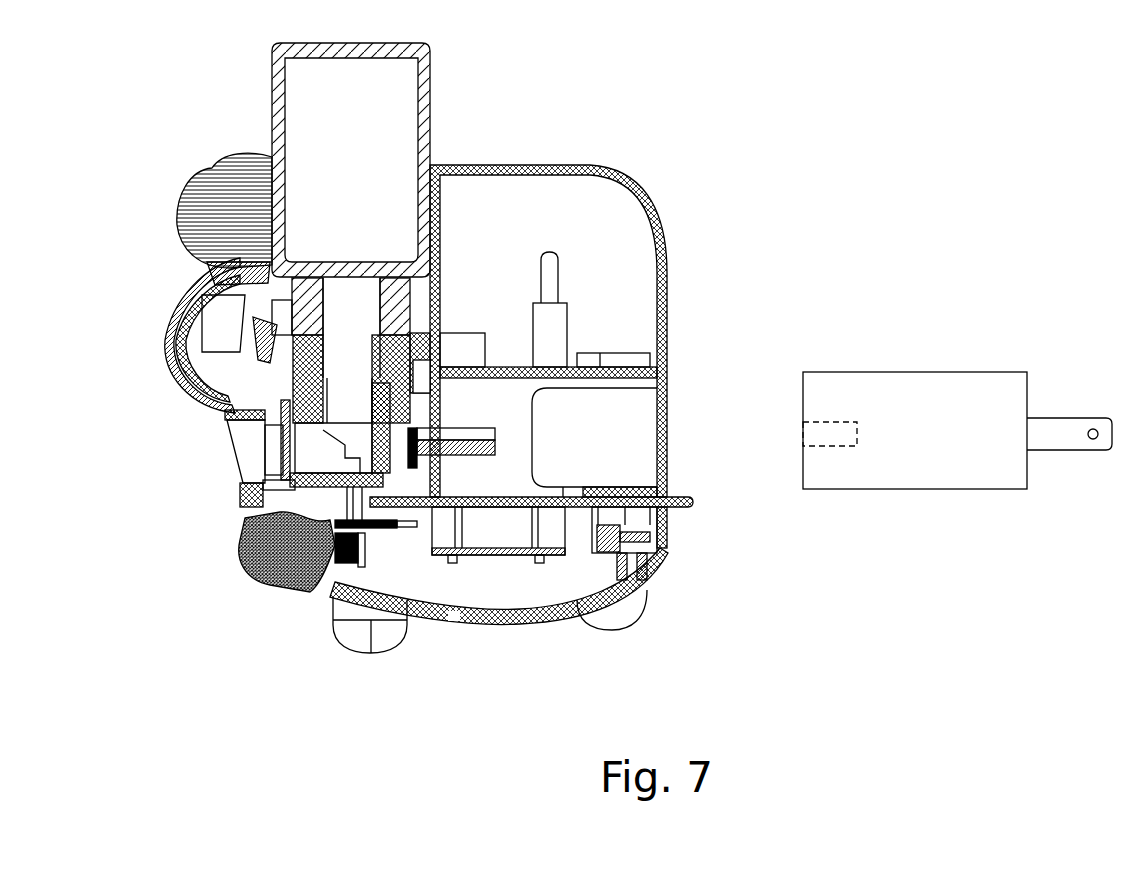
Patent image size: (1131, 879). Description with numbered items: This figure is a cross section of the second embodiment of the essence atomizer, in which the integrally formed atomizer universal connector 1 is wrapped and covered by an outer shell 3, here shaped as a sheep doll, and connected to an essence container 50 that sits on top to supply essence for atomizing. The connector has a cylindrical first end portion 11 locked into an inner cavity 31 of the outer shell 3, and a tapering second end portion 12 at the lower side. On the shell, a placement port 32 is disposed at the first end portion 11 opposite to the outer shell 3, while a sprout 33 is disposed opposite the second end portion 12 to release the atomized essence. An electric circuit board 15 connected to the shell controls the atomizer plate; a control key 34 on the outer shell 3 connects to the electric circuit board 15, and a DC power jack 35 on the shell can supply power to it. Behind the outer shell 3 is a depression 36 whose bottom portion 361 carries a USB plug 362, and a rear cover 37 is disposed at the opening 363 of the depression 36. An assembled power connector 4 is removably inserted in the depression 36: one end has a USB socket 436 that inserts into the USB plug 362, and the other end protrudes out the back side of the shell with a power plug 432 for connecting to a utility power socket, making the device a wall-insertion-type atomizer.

The atomizer universal connector 1 is at (190, 392).
The first end portion 11 is at (287, 352).
The second end portion 12 is at (335, 600).
The electric circuit board 15 is at (447, 478).
The outer shell 3 is at (452, 166).
The inner cavity 31 is at (550, 233).
The placement port 32 is at (213, 272).
The sprout 33 is at (252, 460).
The control key 34 is at (247, 554).
The DC power jack 35 is at (660, 550).
The depression 36 is at (563, 490).
The bottom portion 361 is at (465, 495).
The USB plug 362 is at (490, 447).
The opening 363 is at (668, 376).
The rear cover 37 is at (643, 462).
The assembled power connector 4 is at (926, 390).
The power plug 432 is at (1050, 445).
The USB socket 436 is at (815, 438).
The essence container 50 is at (302, 143).